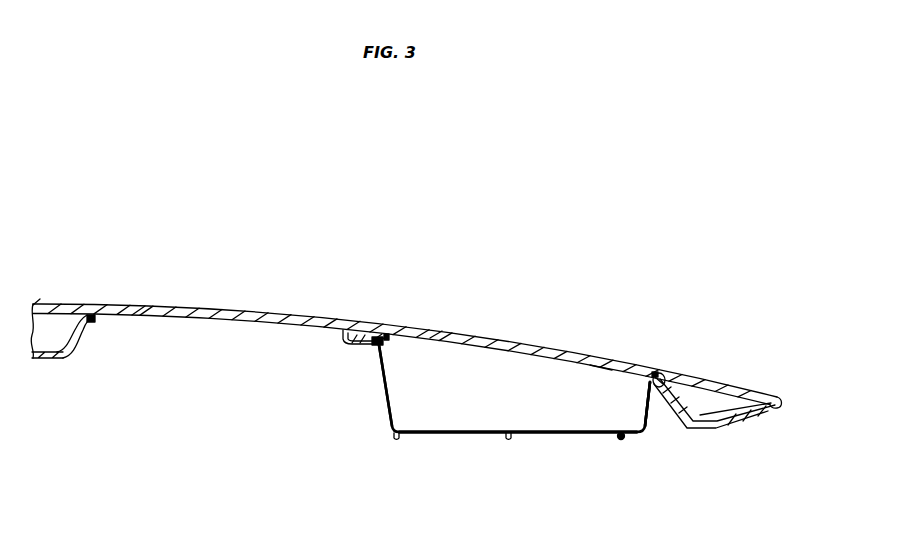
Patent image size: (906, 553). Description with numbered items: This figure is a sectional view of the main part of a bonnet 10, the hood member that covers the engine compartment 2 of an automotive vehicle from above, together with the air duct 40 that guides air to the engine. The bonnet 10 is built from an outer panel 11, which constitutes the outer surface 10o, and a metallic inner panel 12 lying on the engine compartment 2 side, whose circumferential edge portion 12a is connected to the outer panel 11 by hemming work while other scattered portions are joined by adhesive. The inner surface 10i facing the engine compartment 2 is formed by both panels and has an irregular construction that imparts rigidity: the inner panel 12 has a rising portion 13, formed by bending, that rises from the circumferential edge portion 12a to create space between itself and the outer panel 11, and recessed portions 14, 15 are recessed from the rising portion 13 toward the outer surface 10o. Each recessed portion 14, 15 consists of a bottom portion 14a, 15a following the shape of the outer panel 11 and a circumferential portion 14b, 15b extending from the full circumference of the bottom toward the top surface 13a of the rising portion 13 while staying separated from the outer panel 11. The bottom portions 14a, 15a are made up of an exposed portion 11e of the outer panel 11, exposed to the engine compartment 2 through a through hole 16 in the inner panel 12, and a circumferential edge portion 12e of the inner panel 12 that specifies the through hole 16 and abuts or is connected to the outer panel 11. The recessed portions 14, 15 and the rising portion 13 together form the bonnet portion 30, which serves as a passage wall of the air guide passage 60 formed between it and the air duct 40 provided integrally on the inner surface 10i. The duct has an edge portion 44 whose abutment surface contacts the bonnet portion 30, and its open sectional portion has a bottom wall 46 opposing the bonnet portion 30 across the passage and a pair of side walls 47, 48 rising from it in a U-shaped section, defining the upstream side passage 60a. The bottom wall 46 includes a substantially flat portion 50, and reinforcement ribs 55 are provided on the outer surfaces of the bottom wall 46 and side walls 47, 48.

The engine compartment 2 is at (206, 460).
The bonnet 10 is at (405, 340).
The outer surface 10o is at (222, 305).
The inner surface 10i is at (250, 392).
The outer panel 11 is at (673, 357).
The exposed portion 11e is at (203, 320).
The inner panel 12 is at (732, 424).
The circumferential edge portion 12a is at (780, 396).
The circumferential edge portion 12e is at (87, 313).
The rising portion 13 is at (722, 389).
The top surface 13a is at (40, 358).
The recessed portion 14 is at (495, 392).
The bottom portion 14a is at (598, 372).
The circumferential portion 14b is at (659, 393).
The recessed portion 15 is at (165, 370).
The bottom portion 15a is at (286, 332).
The circumferential portion 15b is at (80, 338).
The through hole 16 is at (137, 316).
The bonnet portion 30 is at (508, 334).
The air duct 40 is at (495, 392).
The edge portion 44 is at (703, 413).
The bottom wall 46 is at (518, 457).
The side wall 47 is at (385, 398).
The side wall 48 is at (647, 412).
The flat portion 50 is at (533, 437).
The reinforcement ribs 55 is at (620, 439).
The air guide passage 60 is at (518, 457).
The upstream side passage 60a is at (458, 405).